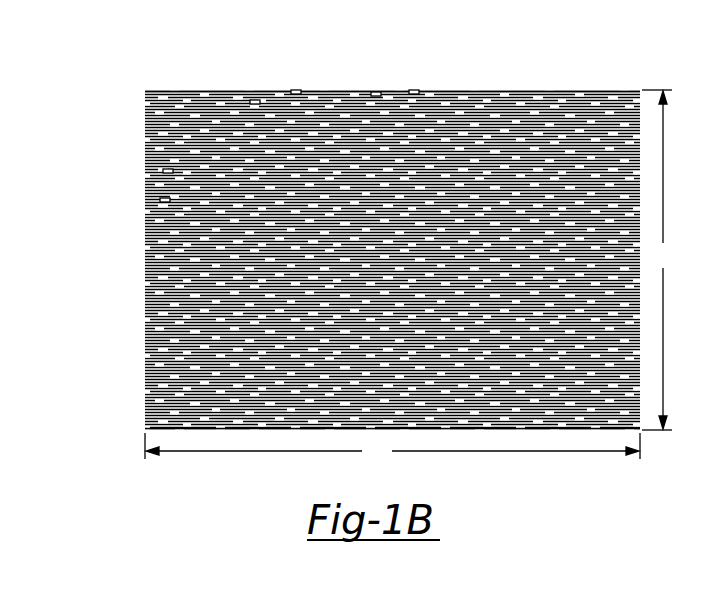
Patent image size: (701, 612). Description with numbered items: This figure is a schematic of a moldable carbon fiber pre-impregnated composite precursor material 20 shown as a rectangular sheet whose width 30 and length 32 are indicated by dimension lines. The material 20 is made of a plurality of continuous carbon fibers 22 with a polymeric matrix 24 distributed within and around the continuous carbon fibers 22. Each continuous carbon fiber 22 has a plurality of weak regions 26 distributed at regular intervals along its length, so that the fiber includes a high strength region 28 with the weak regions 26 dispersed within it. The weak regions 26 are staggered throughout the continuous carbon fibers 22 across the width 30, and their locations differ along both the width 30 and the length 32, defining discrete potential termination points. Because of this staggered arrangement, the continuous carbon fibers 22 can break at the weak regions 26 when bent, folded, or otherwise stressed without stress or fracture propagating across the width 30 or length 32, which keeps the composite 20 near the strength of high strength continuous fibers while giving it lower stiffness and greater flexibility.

The moldable carbon fiber pre-impregnated composite precursor material 20 is at (148, 68).
The continuous carbon fibers 22 is at (146, 90).
The polymeric matrix 24 is at (165, 147).
The weak regions 26 is at (254, 102).
The high strength region 28 is at (376, 93).
The width 30 is at (661, 260).
The length 32 is at (392, 448).